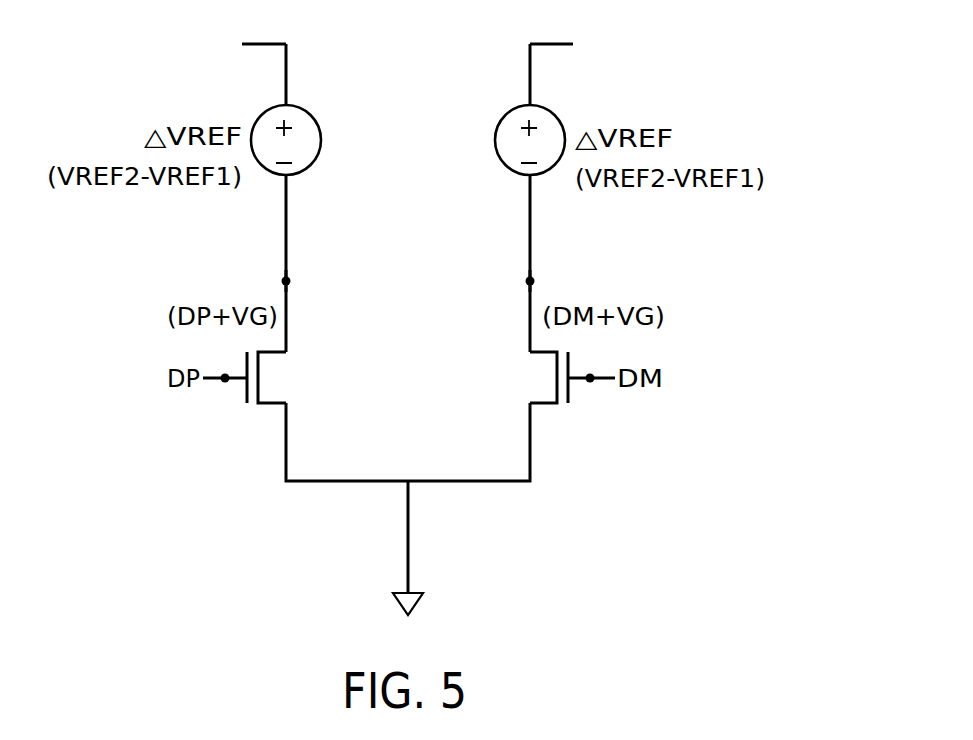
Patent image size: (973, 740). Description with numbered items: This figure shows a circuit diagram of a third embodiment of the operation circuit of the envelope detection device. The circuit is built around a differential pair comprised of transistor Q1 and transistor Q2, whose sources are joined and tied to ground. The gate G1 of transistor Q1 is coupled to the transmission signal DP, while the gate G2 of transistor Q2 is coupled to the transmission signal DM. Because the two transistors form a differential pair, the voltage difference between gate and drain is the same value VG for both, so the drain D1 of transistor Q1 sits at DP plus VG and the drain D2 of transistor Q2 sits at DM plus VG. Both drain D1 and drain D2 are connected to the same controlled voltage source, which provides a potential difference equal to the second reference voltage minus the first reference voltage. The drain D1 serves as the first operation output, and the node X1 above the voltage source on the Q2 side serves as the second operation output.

The node X1 is at (736, 44).
The drain D1 is at (267, 280).
The drain D2 is at (550, 280).
The transistor Q1 is at (286, 377).
The transistor Q2 is at (535, 377).
The gate G1 is at (225, 384).
The gate G2 is at (590, 384).